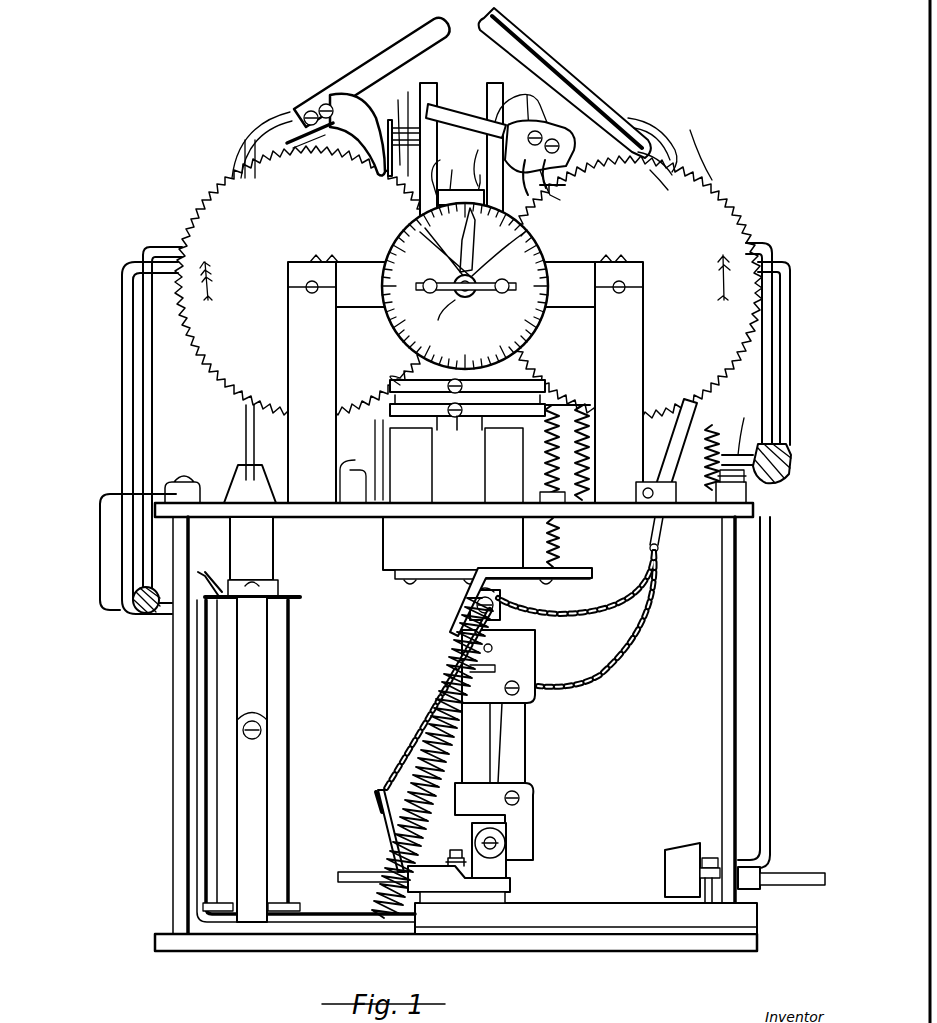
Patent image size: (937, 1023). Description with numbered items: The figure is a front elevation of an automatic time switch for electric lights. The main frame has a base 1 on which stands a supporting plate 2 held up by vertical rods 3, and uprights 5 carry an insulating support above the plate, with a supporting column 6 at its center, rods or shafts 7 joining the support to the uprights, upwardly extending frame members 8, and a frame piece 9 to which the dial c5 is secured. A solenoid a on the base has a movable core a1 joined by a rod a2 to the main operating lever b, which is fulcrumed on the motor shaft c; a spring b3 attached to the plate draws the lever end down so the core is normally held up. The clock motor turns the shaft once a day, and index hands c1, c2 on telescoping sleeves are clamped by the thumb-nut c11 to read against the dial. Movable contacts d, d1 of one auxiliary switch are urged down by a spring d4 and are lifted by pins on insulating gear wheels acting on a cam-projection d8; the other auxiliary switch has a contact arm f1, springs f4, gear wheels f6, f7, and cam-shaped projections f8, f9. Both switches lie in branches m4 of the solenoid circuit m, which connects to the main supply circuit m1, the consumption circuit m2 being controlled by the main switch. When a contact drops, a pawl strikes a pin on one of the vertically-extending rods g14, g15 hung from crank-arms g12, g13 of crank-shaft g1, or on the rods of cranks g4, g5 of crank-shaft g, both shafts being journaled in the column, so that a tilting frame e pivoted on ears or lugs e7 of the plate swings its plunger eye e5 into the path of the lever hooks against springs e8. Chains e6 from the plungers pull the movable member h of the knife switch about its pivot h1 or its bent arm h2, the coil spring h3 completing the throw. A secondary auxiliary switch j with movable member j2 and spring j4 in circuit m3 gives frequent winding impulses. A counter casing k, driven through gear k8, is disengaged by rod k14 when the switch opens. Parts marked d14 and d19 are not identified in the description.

The base 1 is at (168, 928).
The supporting plate 2 is at (380, 518).
The vertical rods 3 is at (178, 686).
The uprights 5 is at (465, 382).
The supporting column 6 is at (461, 438).
The rods or shafts 7 is at (306, 288).
The upwardly extending frame members 8 is at (478, 108).
The frame piece 9 is at (468, 281).
The solenoid a is at (276, 706).
The movable core a1 is at (270, 548).
The rod a2 is at (242, 412).
The main operating lever b is at (432, 758).
The spring b3 is at (596, 505).
The motor shaft c is at (530, 256).
The index hand c1 is at (418, 236).
The index hand c2 is at (530, 236).
The dial c5 is at (466, 301).
The thumb-nut c11 is at (441, 321).
The movable contact d is at (474, 120).
The movable contact d1 is at (578, 80).
The spring d4 is at (660, 136).
The cam-projection d8 is at (420, 180).
The hook d14 is at (660, 170).
The link d19 is at (528, 110).
The tilting frame e is at (666, 451).
The eyes e5 is at (692, 873).
The chains e6 is at (582, 630).
The ears or lugs e7 is at (672, 510).
The springs e8 is at (714, 430).
The contact arm f1 is at (412, 60).
The springs f4 is at (268, 126).
The gear wheel f6 is at (262, 224).
The gear wheel f7 is at (600, 210).
The cam-shaped projection f8 is at (346, 106).
The cam-shaped projection f9 is at (550, 205).
The crank-shaft g is at (420, 376).
The crank-shaft g1 is at (395, 385).
The crank g4 is at (420, 380).
The crank g5 is at (530, 386).
The crank-arm g12 is at (388, 424).
The crank-arm g13 is at (545, 410).
The vertically-extending rod g14 is at (394, 120).
The vertically-extending rod g15 is at (408, 118).
The movable member h is at (520, 722).
The pivot h1 is at (526, 836).
The bent arm h2 is at (386, 826).
The coil spring h3 is at (405, 766).
The secondary auxiliary switch j is at (486, 506).
The movable member j2 is at (386, 465).
The spring j4 is at (560, 530).
The casing k is at (450, 188).
The gear k8 is at (476, 160).
The rod k14 is at (478, 588).
The circuit m is at (198, 770).
The main supply circuit m1 is at (790, 872).
The consumption circuit m2 is at (350, 874).
The circuit m3 is at (218, 490).
The branches m4 is at (150, 330).